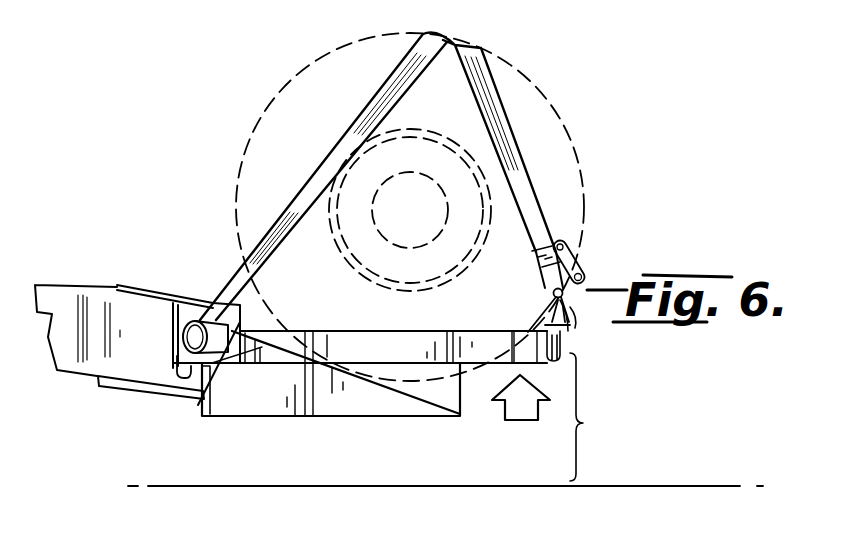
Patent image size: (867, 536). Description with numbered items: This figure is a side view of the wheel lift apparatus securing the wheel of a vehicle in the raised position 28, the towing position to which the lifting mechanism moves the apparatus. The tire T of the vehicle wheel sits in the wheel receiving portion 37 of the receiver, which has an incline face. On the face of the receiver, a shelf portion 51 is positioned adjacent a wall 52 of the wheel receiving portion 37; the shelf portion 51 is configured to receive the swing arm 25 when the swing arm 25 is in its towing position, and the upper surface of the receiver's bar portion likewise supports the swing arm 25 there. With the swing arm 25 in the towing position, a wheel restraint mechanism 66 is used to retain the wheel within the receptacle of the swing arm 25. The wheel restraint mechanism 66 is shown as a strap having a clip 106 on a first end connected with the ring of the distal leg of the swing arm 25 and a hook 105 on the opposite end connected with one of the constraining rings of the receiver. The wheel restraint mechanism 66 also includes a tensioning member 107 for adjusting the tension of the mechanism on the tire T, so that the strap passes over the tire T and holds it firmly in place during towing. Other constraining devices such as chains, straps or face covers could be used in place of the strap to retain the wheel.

The tire T is at (553, 130).
The wheel restraint mechanism 66 is at (486, 84).
The tensioning member 107 is at (568, 250).
The clip 106 is at (565, 323).
The swing arm 25 is at (542, 364).
The wheel receiving portion 37 is at (317, 416).
The hook 105 is at (160, 386).
The shelf portion 51 is at (200, 402).
The wall 52 is at (212, 415).
The raised position 28 is at (612, 433).